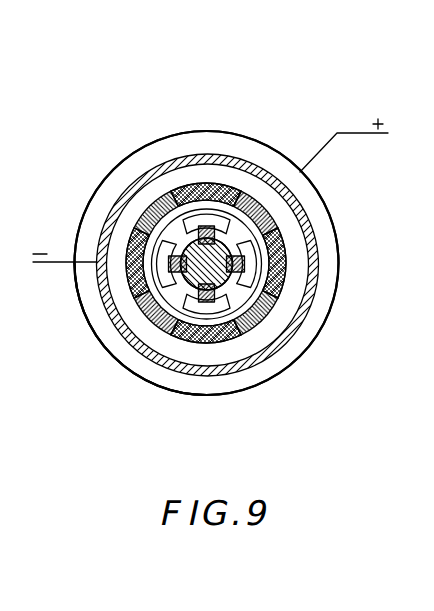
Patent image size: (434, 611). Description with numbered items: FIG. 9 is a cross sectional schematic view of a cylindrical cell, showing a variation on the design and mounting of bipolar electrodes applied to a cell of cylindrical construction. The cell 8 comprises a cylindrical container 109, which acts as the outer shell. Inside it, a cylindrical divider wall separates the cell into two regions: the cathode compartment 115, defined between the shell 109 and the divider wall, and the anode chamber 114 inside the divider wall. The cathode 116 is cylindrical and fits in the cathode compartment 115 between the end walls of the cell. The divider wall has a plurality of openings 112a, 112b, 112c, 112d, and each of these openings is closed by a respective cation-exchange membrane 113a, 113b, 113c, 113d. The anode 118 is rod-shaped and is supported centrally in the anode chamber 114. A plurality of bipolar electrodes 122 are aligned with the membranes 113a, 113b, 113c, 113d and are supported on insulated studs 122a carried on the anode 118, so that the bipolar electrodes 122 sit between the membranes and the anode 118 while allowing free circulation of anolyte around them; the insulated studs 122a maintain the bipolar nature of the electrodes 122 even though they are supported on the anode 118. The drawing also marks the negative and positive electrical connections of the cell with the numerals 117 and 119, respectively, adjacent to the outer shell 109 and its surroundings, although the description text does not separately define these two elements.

The cell 8 is at (165, 94).
The cylindrical container 109 is at (92, 197).
The opening 112a is at (133, 289).
The opening 112b is at (183, 349).
The opening 112c is at (286, 288).
The opening 112d is at (195, 183).
The cation-exchange membrane 113a is at (168, 243).
The cation-exchange membrane 113b is at (223, 297).
The cation-exchange membrane 113c is at (247, 254).
The cation-exchange membrane 113d is at (219, 226).
The anode chamber 114 is at (236, 291).
The cathode compartment 115 is at (118, 178).
The cathode 116 is at (142, 378).
The negative electrode layer 117 is at (34, 264).
The anode 118 is at (208, 273).
The positive electrode shell 119 is at (319, 152).
The bipolar electrode 122 is at (159, 201).
The insulated stud 122a is at (248, 194).